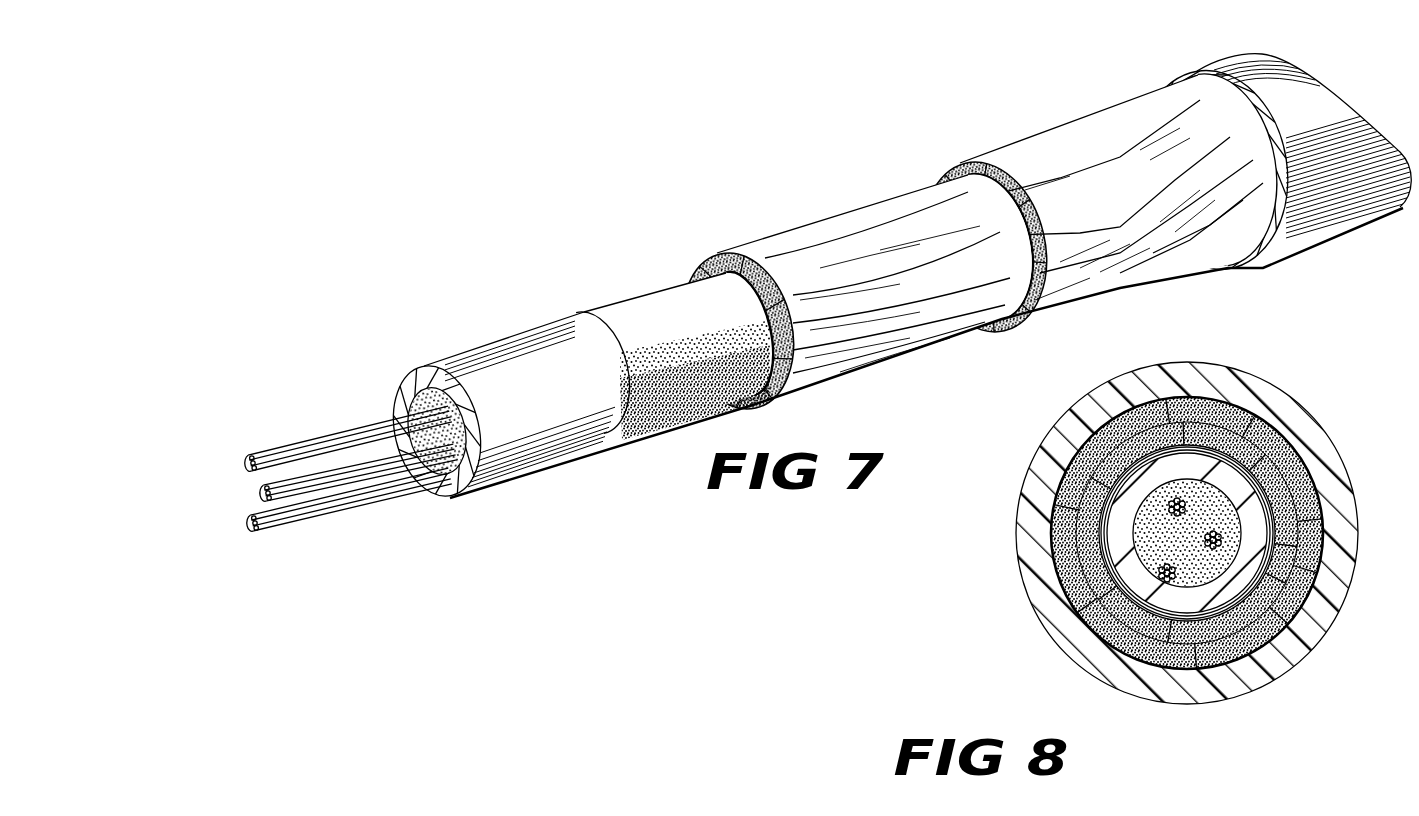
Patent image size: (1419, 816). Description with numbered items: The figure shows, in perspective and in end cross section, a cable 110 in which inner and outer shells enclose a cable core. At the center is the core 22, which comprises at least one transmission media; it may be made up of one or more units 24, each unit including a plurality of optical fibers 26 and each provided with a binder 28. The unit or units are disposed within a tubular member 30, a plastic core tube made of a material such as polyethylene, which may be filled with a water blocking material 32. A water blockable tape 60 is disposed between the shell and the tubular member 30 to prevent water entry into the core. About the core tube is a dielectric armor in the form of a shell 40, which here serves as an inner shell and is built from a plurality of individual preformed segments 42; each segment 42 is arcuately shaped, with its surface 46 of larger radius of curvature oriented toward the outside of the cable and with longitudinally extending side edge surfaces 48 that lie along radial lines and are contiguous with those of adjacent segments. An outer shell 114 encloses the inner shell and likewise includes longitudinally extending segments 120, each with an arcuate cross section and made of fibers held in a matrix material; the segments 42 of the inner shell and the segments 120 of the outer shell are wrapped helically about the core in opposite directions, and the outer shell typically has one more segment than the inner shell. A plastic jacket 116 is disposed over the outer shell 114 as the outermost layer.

In FIG. 7, the cable 110 is at (608, 236).
In FIG. 8, the cable 110 is at (1274, 364).
In FIG. 7, the core 22 is at (368, 506).
In FIG. 8, the core 22 is at (1132, 511).
In FIG. 7, the unit 24 is at (337, 422).
In FIG. 8, the unit 24 is at (1202, 505).
In FIG. 7, the optical fibers 26 is at (256, 530).
In FIG. 8, the optical fibers 26 is at (1226, 536).
In FIG. 7, the binder 28 is at (312, 437).
In FIG. 7, the tubular member 30 is at (412, 372).
In FIG. 8, the tubular member 30 is at (1181, 584).
In FIG. 7, the water blocking material 32 is at (437, 484).
In FIG. 8, the water blocking material 32 is at (1178, 484).
In FIG. 7, the shell 40 is at (722, 252).
In FIG. 8, the shell 40 is at (1316, 504).
In FIG. 7, the segments 42 is at (822, 222).
In FIG. 8, the segments 42 is at (1102, 472).
In FIG. 7, the surface 46 is at (918, 328).
In FIG. 8, the surface 46 is at (1300, 442).
In FIG. 7, the side edge surfaces 48 is at (770, 284).
In FIG. 8, the side edge surfaces 48 is at (1250, 426).
In FIG. 7, the water blockable tape 60 is at (628, 438).
In FIG. 8, the water blockable tape 60 is at (1152, 430).
In FIG. 7, the outer shell 114 is at (979, 160).
In FIG. 8, the outer shell 114 is at (1046, 513).
In FIG. 7, the plastic jacket 116 is at (1208, 73).
In FIG. 8, the plastic jacket 116 is at (1200, 377).
In FIG. 7, the segments 120 is at (1075, 160).
In FIG. 8, the segments 120 is at (1092, 624).